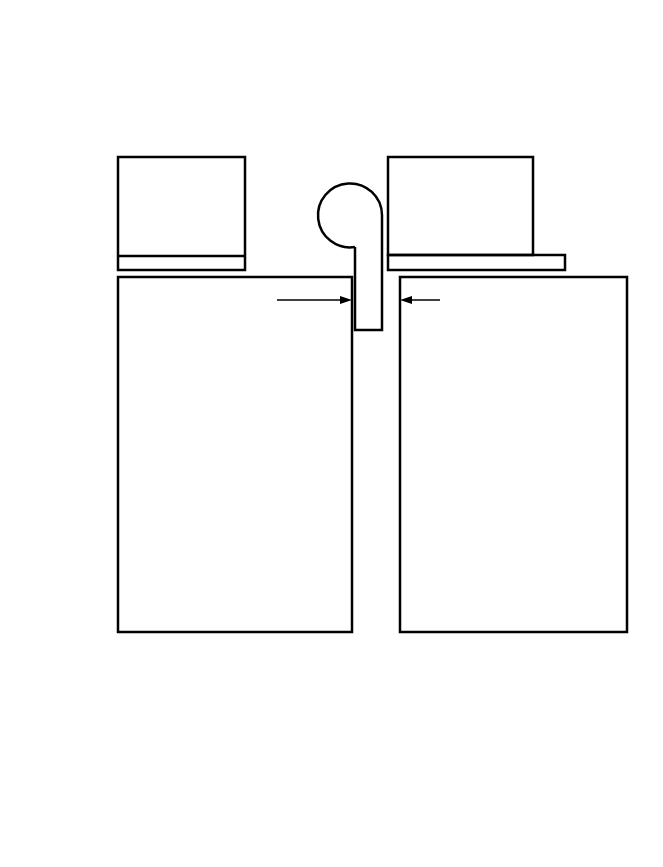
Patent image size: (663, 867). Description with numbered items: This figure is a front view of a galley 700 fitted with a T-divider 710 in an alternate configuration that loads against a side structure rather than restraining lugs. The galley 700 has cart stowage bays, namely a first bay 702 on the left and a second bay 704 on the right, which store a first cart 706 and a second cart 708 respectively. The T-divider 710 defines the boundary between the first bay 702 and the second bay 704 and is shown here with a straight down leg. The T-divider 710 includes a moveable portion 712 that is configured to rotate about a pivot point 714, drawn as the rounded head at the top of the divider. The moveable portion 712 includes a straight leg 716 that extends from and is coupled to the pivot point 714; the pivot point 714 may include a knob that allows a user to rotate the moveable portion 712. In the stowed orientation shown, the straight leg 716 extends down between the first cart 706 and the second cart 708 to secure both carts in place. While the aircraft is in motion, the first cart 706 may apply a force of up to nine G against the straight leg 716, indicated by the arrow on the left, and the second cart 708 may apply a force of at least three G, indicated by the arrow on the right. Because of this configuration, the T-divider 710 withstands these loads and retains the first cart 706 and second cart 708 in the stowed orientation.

The galley 700 is at (103, 170).
The first bay 702 is at (160, 660).
The second bay 704 is at (582, 663).
The first cart 706 is at (283, 603).
The second cart 708 is at (545, 612).
The T-divider 710 is at (266, 172).
The moveable portion 712 is at (304, 197).
The pivot point 714 is at (353, 207).
The straight leg 716 is at (373, 310).